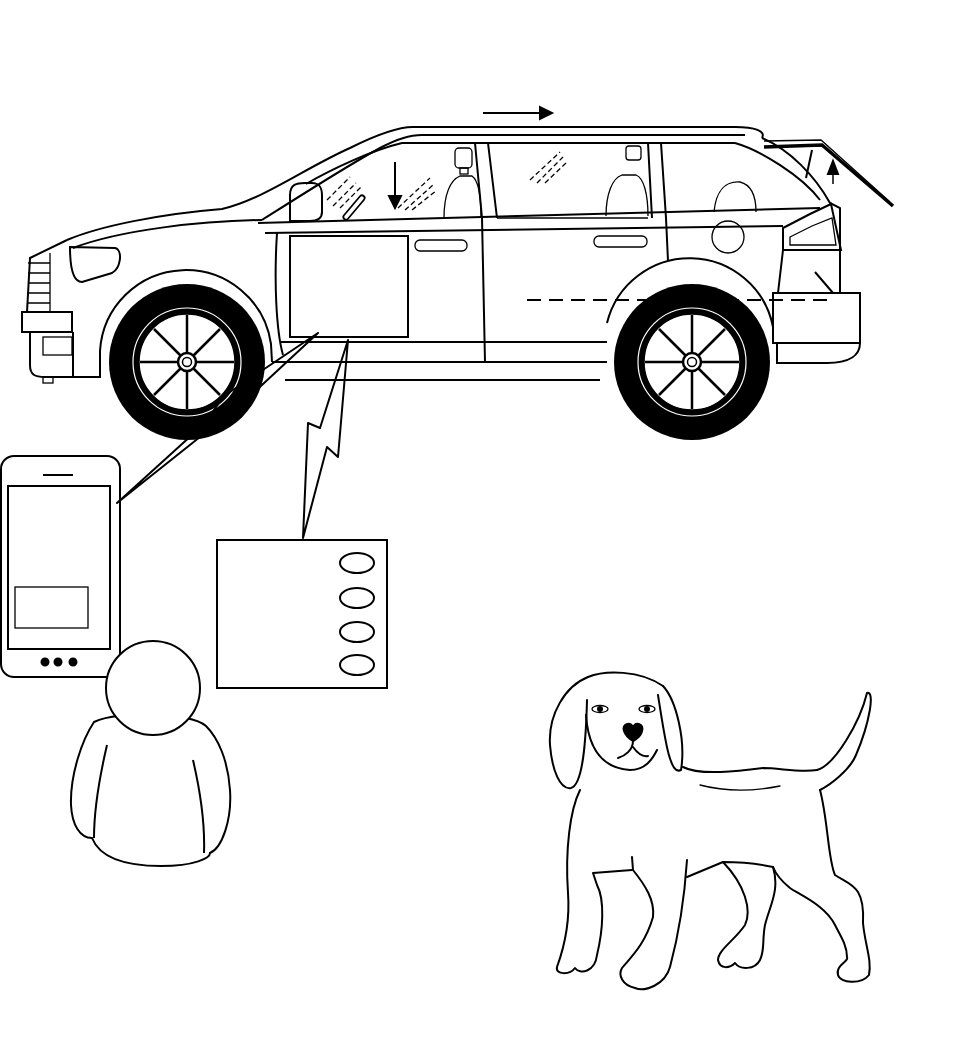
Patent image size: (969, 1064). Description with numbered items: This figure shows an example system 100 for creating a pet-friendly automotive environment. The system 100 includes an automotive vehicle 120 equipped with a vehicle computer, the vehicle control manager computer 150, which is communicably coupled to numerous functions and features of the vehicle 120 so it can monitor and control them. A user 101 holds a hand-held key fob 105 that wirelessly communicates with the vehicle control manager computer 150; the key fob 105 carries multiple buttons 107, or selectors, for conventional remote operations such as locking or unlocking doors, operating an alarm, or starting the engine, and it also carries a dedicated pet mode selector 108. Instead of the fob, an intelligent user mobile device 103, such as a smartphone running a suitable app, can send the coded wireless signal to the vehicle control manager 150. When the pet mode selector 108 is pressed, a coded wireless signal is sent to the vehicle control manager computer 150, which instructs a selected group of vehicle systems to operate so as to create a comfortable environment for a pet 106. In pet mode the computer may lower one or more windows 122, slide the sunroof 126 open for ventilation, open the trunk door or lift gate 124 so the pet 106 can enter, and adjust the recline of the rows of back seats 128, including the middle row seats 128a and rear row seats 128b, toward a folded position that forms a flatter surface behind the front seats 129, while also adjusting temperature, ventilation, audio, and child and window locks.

The system for creating a pet-friendly automotive environment 100 is at (96, 34).
The user 101 is at (90, 747).
The user mobile device 103 is at (90, 452).
The key fob 105 is at (266, 540).
The pet 106 is at (763, 768).
The buttons 107 is at (535, 566).
The pet mode selector 108 is at (357, 667).
The automotive vehicle 120 is at (368, 135).
The windows 122 is at (363, 175).
The trunk door/lift gate 124 is at (800, 143).
The sunroof 126 is at (452, 132).
The rows of back seats 128 is at (637, 249).
The middle row seats 128a is at (620, 170).
The rear row seats 128b is at (673, 230).
The front seats 129 is at (452, 172).
The vehicle control manager computer 150 is at (408, 325).